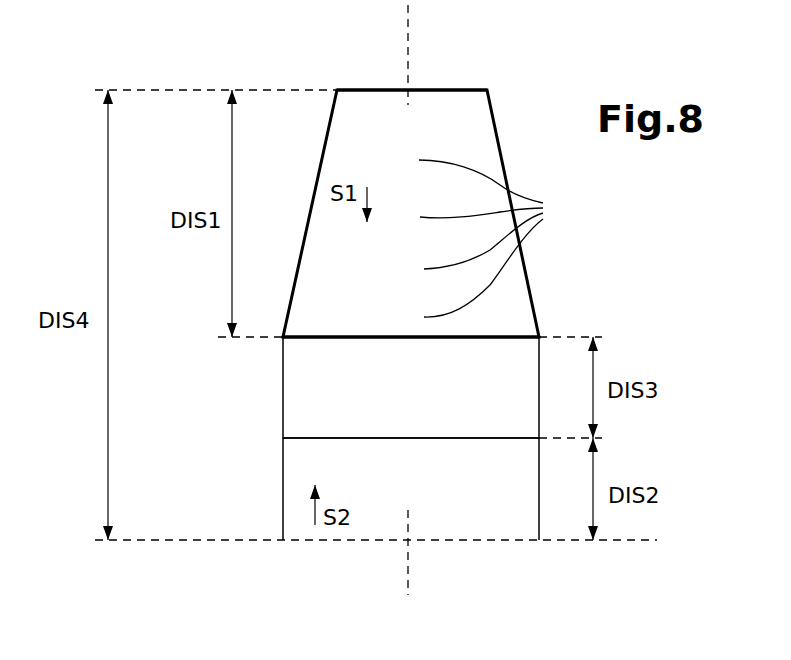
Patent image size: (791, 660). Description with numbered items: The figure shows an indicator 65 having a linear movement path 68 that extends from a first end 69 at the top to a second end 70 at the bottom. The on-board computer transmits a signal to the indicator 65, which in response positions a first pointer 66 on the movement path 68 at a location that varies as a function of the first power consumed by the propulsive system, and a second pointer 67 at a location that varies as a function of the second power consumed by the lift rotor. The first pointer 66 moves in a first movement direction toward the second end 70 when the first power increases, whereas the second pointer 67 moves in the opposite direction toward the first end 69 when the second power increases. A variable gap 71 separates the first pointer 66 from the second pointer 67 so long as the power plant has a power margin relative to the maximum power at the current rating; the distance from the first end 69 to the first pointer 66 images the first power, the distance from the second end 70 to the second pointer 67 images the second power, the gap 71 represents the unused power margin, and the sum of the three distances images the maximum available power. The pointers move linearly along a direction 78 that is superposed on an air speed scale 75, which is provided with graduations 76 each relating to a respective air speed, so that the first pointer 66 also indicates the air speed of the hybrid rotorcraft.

The indicator 65 is at (432, 556).
The first pointer 66 is at (517, 339).
The second pointer 67 is at (312, 438).
The movement path 68 is at (480, 74).
The first end 69 is at (447, 88).
The second end 70 is at (493, 542).
The gap 71 is at (427, 404).
The air speed scale 75 is at (428, 150).
The graduations 76 is at (484, 239).
The direction 78 is at (408, 24).